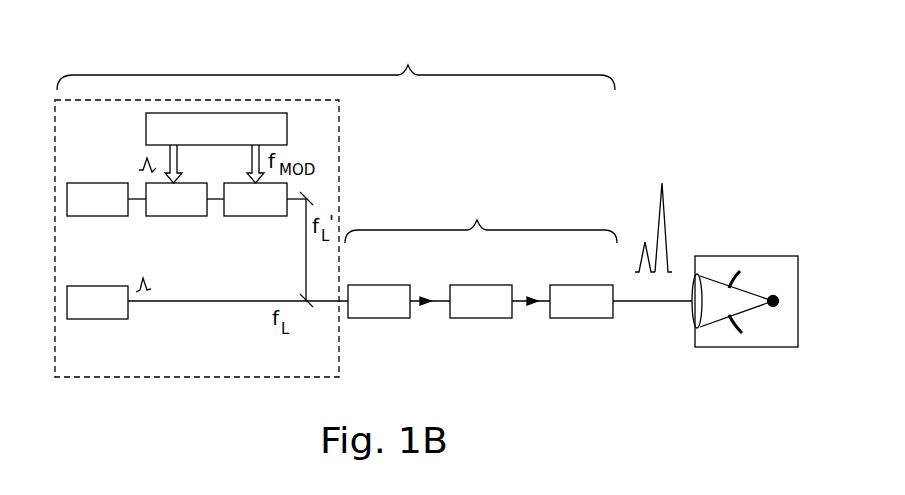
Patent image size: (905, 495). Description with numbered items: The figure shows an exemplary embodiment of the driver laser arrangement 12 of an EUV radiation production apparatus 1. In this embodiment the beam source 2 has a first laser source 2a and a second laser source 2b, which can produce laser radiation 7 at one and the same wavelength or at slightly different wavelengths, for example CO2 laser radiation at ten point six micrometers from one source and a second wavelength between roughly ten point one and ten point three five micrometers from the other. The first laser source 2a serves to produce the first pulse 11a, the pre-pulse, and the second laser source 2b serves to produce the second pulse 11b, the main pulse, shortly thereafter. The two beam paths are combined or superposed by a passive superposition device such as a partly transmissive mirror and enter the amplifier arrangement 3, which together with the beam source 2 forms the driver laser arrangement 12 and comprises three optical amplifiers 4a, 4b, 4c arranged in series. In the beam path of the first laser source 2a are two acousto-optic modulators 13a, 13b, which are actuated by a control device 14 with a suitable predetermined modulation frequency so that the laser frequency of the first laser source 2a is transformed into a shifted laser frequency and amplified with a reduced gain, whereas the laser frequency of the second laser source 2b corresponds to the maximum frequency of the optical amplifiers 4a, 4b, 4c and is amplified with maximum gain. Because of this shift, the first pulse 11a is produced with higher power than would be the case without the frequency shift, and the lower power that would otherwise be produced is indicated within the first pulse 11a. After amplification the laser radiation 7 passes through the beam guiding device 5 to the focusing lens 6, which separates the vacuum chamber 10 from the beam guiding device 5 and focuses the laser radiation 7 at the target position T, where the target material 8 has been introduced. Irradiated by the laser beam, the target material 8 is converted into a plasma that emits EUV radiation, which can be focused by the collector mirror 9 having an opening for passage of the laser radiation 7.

The EUV radiation production apparatus 1 is at (94, 56).
The beam source 2 is at (202, 378).
The first laser source 2a is at (96, 216).
The second laser source 2b is at (95, 319).
The amplifier arrangement 3 is at (481, 219).
The optical amplifier 4a is at (383, 299).
The optical amplifier 4b is at (483, 299).
The optical amplifier 4c is at (587, 299).
The beam guiding device 5 is at (637, 303).
The focusing lens 6 is at (695, 312).
The laser radiation 7 is at (717, 296).
The target material 8 is at (780, 300).
The collector mirror 9 is at (729, 335).
The vacuum chamber 10 is at (799, 307).
The first pulse 11a is at (140, 160).
The second pulse 11b is at (151, 286).
The driver laser arrangement 12 is at (336, 67).
The acousto-optic modulator 13a is at (170, 216).
The acousto-optic modulator 13b is at (247, 216).
The control device 14 is at (146, 131).
The target position T is at (770, 275).